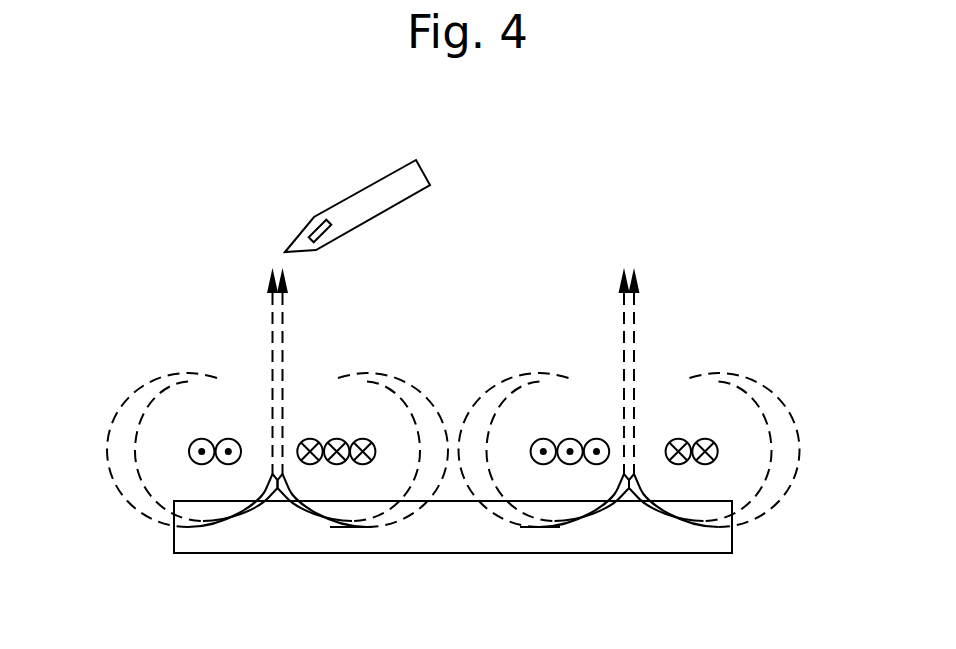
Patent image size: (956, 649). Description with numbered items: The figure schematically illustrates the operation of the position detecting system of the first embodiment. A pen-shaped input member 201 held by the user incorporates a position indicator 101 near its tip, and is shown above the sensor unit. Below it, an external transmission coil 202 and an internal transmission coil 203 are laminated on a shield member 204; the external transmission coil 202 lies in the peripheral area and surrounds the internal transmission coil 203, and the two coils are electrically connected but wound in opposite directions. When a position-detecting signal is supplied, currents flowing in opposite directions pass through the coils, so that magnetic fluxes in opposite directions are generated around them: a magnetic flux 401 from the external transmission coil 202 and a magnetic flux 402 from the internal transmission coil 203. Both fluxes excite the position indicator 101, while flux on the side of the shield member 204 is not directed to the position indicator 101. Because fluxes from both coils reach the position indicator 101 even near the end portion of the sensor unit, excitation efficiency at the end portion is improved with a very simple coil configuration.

The position indicator 101 is at (311, 223).
The pen-shaped input member 201 is at (421, 186).
The external transmission coil 202 is at (189, 451).
The internal transmission coil 203 is at (368, 490).
The shield member 204 is at (308, 553).
The magnetic flux 401 is at (140, 390).
The magnetic flux 402 is at (390, 379).